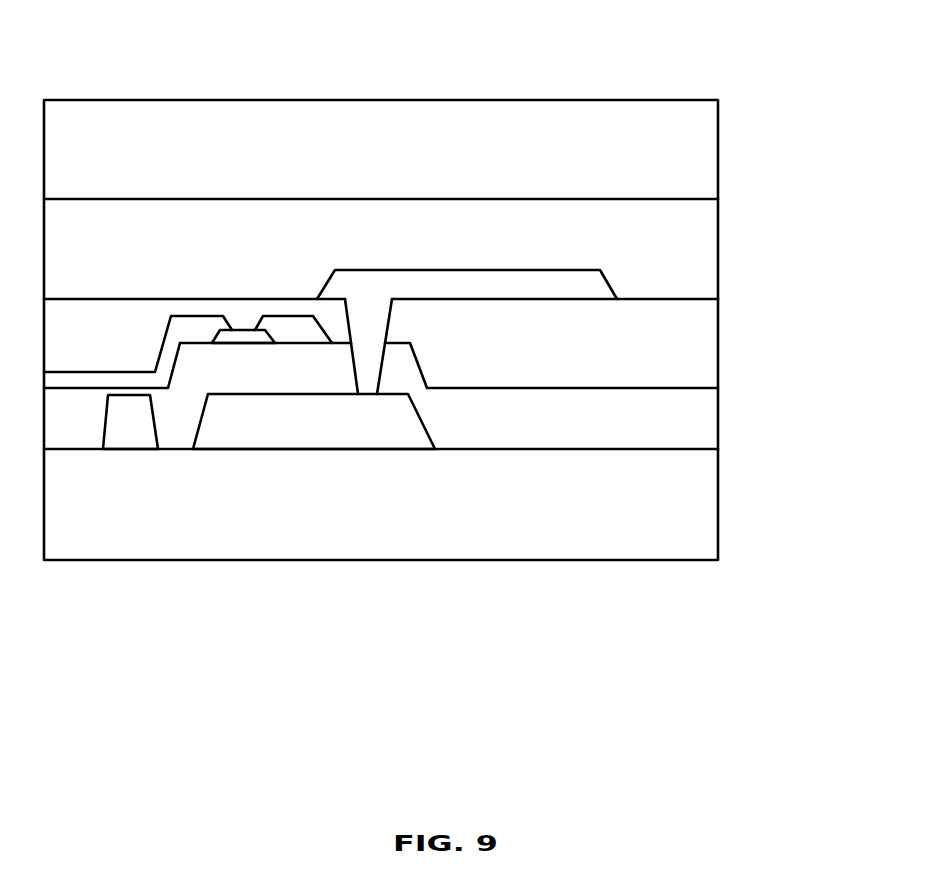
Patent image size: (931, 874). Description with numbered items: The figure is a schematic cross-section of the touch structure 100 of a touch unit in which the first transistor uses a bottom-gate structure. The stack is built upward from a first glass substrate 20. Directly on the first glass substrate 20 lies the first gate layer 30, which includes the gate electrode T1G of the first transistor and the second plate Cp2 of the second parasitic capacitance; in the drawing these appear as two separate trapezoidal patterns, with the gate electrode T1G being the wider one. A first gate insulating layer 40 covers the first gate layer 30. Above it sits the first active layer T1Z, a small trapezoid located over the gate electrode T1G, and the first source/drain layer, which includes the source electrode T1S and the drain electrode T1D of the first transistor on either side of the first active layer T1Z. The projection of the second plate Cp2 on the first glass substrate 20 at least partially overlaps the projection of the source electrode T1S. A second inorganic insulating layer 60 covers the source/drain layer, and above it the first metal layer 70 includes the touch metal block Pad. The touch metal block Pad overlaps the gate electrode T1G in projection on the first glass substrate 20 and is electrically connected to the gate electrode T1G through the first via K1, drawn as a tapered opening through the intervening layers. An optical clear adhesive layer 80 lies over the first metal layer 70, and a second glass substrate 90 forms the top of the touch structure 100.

The touch structure 100 is at (418, 45).
The second glass substrate 90 is at (692, 161).
The optical clear adhesive (OCA) layer 80 is at (692, 254).
The second inorganic insulating layer 60 is at (692, 345).
The first gate insulating layer 40 is at (692, 420).
The first glass substrate 20 is at (692, 505).
The first gate layer 30 is at (268, 719).
The first metal layer 70 is at (524, 640).
The second plate of the second parasitic capacitance Cp2 is at (123, 422).
The drain electrode T1D is at (188, 326).
The source electrode T1S is at (293, 326).
The first active layer T1Z is at (243, 337).
The gate electrode T1G is at (403, 422).
The first via K1 is at (358, 337).
The touch metal block Pad is at (523, 282).